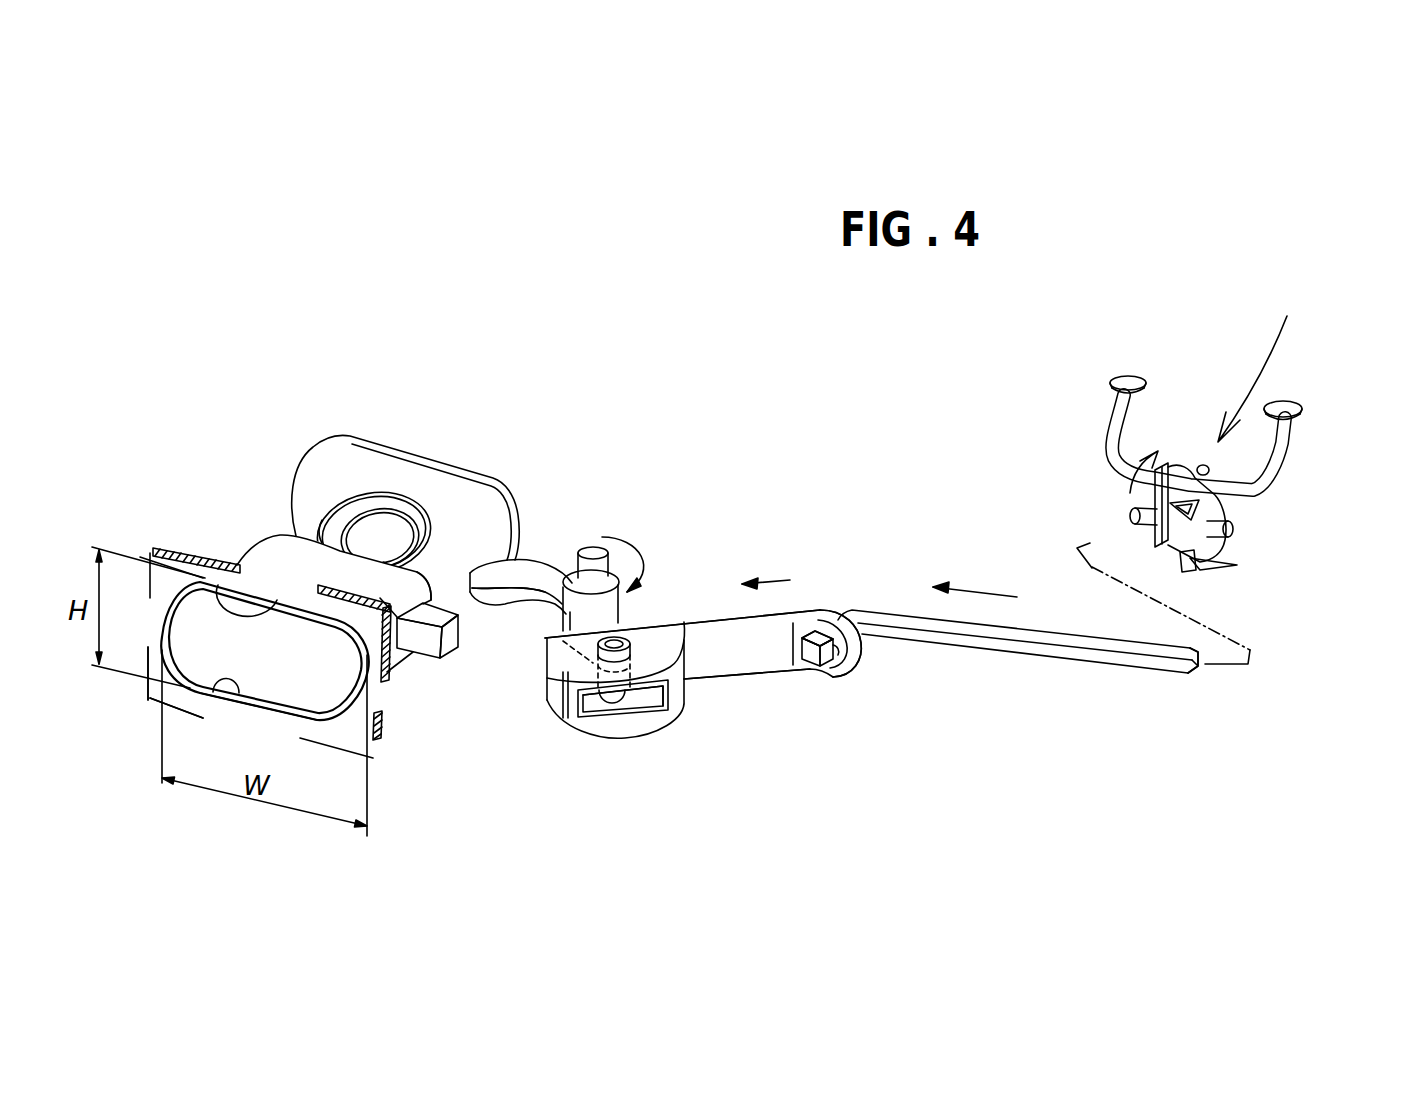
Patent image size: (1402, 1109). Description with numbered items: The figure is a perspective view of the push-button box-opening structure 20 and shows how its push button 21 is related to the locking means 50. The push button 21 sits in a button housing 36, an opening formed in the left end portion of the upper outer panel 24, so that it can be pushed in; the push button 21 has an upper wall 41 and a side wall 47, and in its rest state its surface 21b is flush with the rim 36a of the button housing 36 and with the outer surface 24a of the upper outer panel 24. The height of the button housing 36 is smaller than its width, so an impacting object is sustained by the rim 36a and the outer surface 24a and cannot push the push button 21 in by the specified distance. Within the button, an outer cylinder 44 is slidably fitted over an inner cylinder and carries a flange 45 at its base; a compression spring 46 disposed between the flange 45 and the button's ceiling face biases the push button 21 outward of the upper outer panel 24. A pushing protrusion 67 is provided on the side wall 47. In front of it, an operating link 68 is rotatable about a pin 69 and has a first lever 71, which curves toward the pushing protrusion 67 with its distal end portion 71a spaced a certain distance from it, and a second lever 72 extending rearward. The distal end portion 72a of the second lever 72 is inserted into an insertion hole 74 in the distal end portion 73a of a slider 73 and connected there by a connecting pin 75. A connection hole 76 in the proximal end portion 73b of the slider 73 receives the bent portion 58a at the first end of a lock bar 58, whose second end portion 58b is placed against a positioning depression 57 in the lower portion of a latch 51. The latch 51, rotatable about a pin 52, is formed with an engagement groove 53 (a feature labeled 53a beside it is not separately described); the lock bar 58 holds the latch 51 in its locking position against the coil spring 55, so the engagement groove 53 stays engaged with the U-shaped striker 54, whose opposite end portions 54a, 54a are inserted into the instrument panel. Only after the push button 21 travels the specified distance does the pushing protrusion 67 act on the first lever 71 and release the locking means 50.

The push-button box-opening structure 20 is at (621, 272).
The push button 21 is at (350, 673).
The surface of the push button 21b is at (283, 676).
The upper outer panel 24 is at (150, 688).
The outer surface of the upper outer panel 24a is at (150, 703).
The button housing 36 is at (227, 680).
The rim of the button housing 36a is at (216, 588).
The upper wall 41 is at (273, 553).
The outer cylinder 44 is at (390, 517).
The flange 45 is at (320, 453).
The compression spring 46 is at (351, 495).
The side wall 47 is at (428, 586).
The locking means 50 is at (1271, 369).
The latch 51 is at (1153, 492).
The pin 52 is at (1130, 513).
The engagement groove 53 is at (1190, 497).
The cam pointer 53a is at (1191, 498).
The striker 54 is at (1268, 484).
The opposite end portions of the striker 54a is at (1125, 397).
The coil spring 55 is at (1173, 525).
The positioning depression 57 is at (1190, 567).
The lock bar 58 is at (1013, 652).
The bent portion 58a is at (812, 662).
The second end portion of the lock bar 58b is at (1163, 665).
The pushing protrusion 67 is at (450, 648).
The operating link 68 is at (628, 576).
The pin 69 is at (593, 550).
The first lever 71 is at (533, 568).
The distal end portion of the first lever 71a is at (493, 589).
The second lever 72 is at (697, 638).
The distal end portion of the second lever 72a is at (608, 655).
The slider 73 is at (704, 606).
The distal end portion of the slider 73a is at (553, 700).
The proximal end portion of the slider 73b is at (822, 614).
The insertion hole 74 is at (656, 718).
The connecting pin 75 is at (643, 713).
The connection hole 76 is at (840, 667).